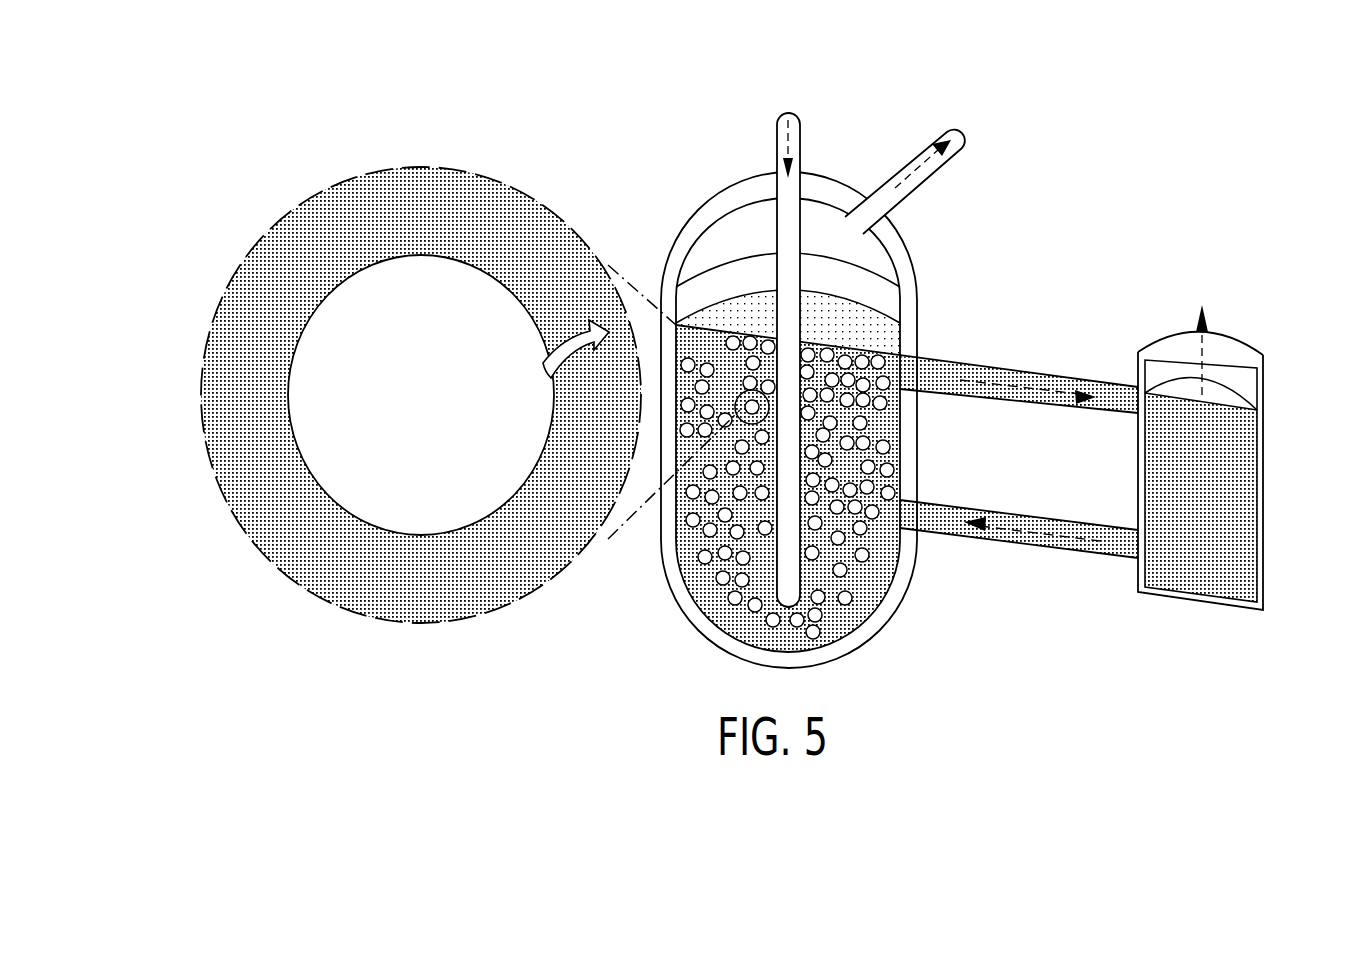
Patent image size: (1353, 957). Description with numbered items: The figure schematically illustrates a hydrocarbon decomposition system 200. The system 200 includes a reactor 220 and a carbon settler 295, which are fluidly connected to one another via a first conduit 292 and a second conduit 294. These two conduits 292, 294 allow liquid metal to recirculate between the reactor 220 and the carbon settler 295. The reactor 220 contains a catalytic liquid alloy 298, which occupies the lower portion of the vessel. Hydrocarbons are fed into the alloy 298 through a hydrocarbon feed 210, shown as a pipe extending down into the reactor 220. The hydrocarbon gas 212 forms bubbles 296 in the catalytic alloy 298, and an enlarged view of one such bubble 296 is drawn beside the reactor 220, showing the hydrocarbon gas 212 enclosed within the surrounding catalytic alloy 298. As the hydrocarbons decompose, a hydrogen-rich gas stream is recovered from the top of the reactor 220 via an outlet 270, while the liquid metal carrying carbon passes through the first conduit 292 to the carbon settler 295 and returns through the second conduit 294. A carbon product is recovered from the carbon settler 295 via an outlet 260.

The hydrocarbon decomposition system 200 is at (337, 124).
The hydrocarbon gas 212 is at (386, 392).
The catalytic liquid alloy 298 is at (237, 289).
The bubbles 296 is at (318, 483).
The reactor 220 is at (899, 613).
The hydrocarbon feed 210 is at (786, 140).
The outlet 270 is at (921, 163).
The first conduit 292 is at (1040, 386).
The second conduit 294 is at (1066, 536).
The carbon settler 295 is at (1265, 500).
The outlet 260 is at (1195, 350).